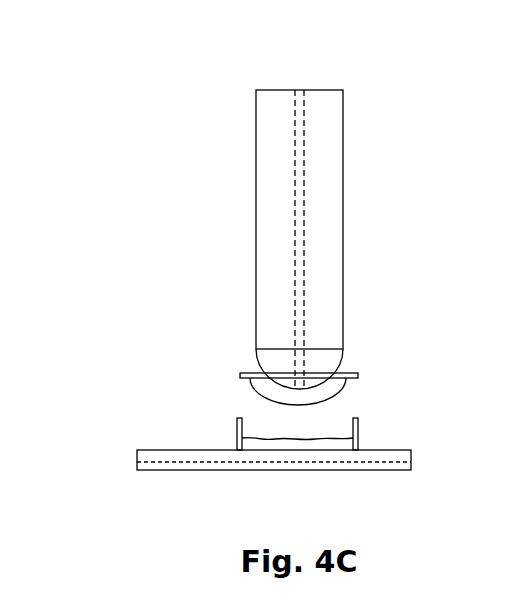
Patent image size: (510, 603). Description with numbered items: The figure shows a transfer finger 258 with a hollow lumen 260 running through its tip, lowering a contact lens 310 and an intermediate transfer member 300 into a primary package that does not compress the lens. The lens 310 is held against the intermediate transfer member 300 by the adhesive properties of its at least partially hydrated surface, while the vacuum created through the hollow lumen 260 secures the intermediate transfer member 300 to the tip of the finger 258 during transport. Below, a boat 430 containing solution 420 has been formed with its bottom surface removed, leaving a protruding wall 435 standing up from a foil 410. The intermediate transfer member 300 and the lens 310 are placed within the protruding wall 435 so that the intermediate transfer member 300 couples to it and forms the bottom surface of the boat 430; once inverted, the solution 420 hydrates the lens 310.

The transfer finger 258 is at (343, 200).
The hollow lumen 260 is at (298, 90).
The intermediate transfer member 300 is at (357, 375).
The lens 310 is at (278, 401).
The foil 410 is at (208, 470).
The solution 420 is at (333, 453).
The boat 430 is at (165, 450).
The protruding wall 435 is at (358, 420).